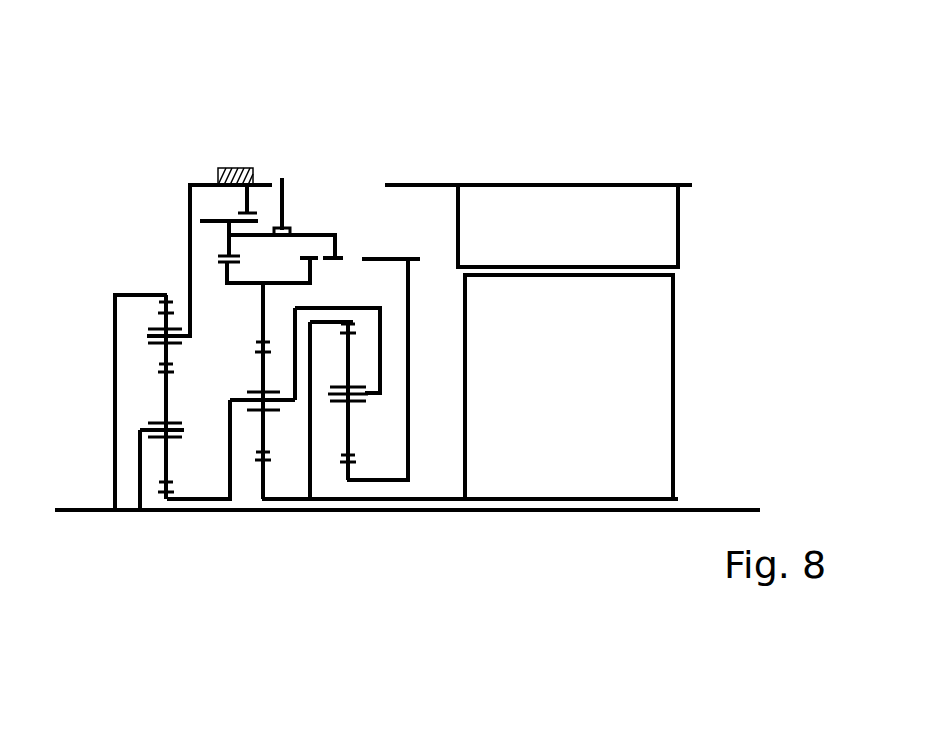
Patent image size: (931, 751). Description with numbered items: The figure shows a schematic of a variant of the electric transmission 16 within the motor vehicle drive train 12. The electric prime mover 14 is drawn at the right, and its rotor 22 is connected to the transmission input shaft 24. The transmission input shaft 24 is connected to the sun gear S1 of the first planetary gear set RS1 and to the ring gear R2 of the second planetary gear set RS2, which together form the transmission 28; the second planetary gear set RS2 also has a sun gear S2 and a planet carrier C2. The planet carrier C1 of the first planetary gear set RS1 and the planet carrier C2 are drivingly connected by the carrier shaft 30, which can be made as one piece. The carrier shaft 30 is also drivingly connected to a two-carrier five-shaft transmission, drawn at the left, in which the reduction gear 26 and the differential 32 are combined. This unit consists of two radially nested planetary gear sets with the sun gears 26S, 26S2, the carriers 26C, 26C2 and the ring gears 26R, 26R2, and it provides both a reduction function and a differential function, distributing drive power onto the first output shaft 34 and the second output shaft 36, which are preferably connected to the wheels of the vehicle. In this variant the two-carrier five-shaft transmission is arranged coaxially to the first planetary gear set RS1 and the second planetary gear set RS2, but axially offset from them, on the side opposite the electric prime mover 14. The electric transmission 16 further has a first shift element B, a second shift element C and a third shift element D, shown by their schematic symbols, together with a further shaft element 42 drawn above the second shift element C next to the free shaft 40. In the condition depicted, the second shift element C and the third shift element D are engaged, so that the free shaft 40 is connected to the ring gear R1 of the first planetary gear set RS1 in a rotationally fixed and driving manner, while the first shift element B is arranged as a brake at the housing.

The motor vehicle drive train 12 is at (130, 92).
The electric prime mover 14 is at (553, 155).
The electric transmission 16 is at (98, 100).
The rotor 22 is at (516, 499).
The transmission input shaft 24 is at (448, 499).
The reduction gear 26 is at (123, 247).
The ring gear 26R2 is at (158, 300).
The carrier 26C2 is at (147, 335).
The sun gear 26S2 is at (172, 362).
The ring gear 26R is at (160, 368).
The planet carrier 26C is at (146, 428).
The sun gear 26S is at (160, 490).
The transmission 28 is at (309, 518).
The carrier shaft 30 is at (203, 499).
The differential 32 is at (130, 247).
The first output shaft 34 is at (592, 512).
The second output shaft 36 is at (77, 512).
The free shaft 40 is at (329, 233).
The input shaft 42 is at (268, 180).
The first shift element B is at (368, 252).
The second shift element C is at (242, 265).
The third shift element D is at (213, 205).
The ring gear of first planetary gear set R1 is at (260, 345).
The planet carrier of first planetary gear set C1 is at (234, 402).
The sun gear of first planetary gear set S1 is at (260, 463).
The ring gear of second planetary gear set R2 is at (350, 323).
The planet carrier of second planetary gear set C2 is at (371, 397).
The second sun gear S2 is at (353, 466).
The first planetary gear set RS1 is at (267, 520).
The second planetary gear set RS2 is at (343, 517).